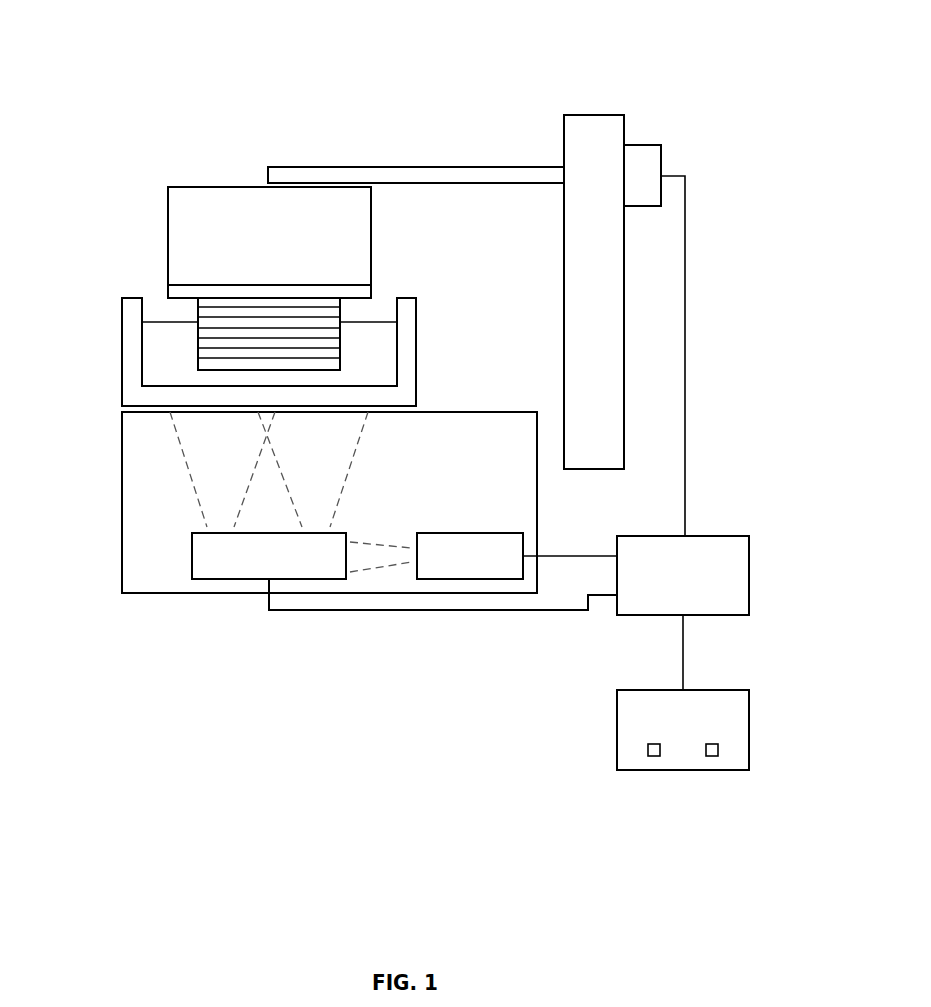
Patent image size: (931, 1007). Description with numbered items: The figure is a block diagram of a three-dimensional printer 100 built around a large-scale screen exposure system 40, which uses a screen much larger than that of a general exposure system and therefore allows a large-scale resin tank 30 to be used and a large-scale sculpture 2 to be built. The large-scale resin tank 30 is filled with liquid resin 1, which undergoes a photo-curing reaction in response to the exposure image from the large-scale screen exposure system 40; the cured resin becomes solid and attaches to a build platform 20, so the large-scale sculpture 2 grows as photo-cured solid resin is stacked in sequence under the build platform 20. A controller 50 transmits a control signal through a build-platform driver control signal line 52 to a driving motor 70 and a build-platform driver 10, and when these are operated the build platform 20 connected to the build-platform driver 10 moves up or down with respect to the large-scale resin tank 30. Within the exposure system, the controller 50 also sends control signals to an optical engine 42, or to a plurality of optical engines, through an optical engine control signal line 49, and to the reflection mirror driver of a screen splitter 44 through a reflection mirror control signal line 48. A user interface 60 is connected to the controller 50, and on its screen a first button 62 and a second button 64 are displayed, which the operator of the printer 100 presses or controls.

The 3D printer 100 is at (703, 227).
The build-platform driver 10 is at (581, 115).
The driving motor 70 is at (643, 150).
The build-platform driver control signal line 52 is at (686, 391).
The build platform 20 is at (175, 292).
The large-scale resin tank 30 is at (125, 313).
The liquid resin 1 is at (378, 363).
The large-scale sculpture 2 is at (198, 357).
The large-scale screen exposure system 40 is at (158, 594).
The screen splitter 44 is at (303, 580).
The optical engine 42 is at (473, 580).
The reflection mirror control signal line 48 is at (398, 612).
The optical engine control signal line 49 is at (563, 558).
The controller 50 is at (750, 573).
The user interface 60 is at (750, 727).
The second button 64 is at (655, 757).
The first button 62 is at (713, 757).